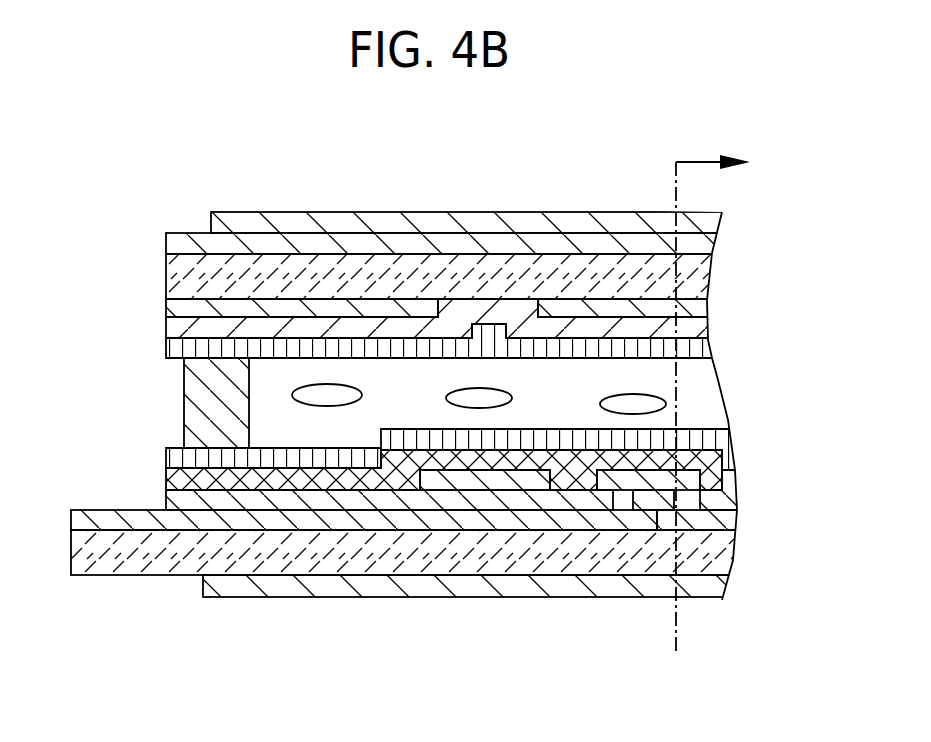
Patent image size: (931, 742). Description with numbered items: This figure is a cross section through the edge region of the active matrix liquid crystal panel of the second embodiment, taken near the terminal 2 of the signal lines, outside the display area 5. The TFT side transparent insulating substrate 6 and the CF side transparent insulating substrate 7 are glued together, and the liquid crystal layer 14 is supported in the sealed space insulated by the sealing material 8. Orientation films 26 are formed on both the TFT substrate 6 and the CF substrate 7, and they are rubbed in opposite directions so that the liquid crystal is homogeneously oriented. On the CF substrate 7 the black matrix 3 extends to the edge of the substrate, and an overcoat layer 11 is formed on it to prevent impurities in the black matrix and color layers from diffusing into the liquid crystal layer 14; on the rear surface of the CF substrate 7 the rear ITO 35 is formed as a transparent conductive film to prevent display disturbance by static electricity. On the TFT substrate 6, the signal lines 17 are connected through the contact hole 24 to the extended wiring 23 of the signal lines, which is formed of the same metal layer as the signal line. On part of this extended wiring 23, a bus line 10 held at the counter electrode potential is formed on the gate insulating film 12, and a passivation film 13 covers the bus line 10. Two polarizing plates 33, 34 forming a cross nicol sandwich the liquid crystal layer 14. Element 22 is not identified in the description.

The terminal of the signal lines 2 is at (118, 515).
The black matrix 3 is at (178, 308).
The display area 5 is at (713, 389).
The TFT side transparent insulating substrate 6 is at (118, 557).
The CF side transparent insulating substrate 7 is at (311, 275).
The sealing material 8 is at (200, 392).
The bus line 10 is at (527, 480).
The overcoat layer 11 is at (702, 330).
The gate insulating film 12 is at (715, 523).
The passivation film 13 is at (178, 478).
The liquid crystal layer 14 is at (712, 398).
The signal lines 17 is at (720, 500).
The color filter 22 is at (470, 298).
The extended wiring of the signal lines 23 is at (435, 520).
The contact hole 24 is at (627, 520).
The orientation films 26 is at (707, 348).
The polarizing plate 33 is at (712, 590).
The polarizing plate 34 is at (567, 218).
The rear ITO 35 is at (708, 248).